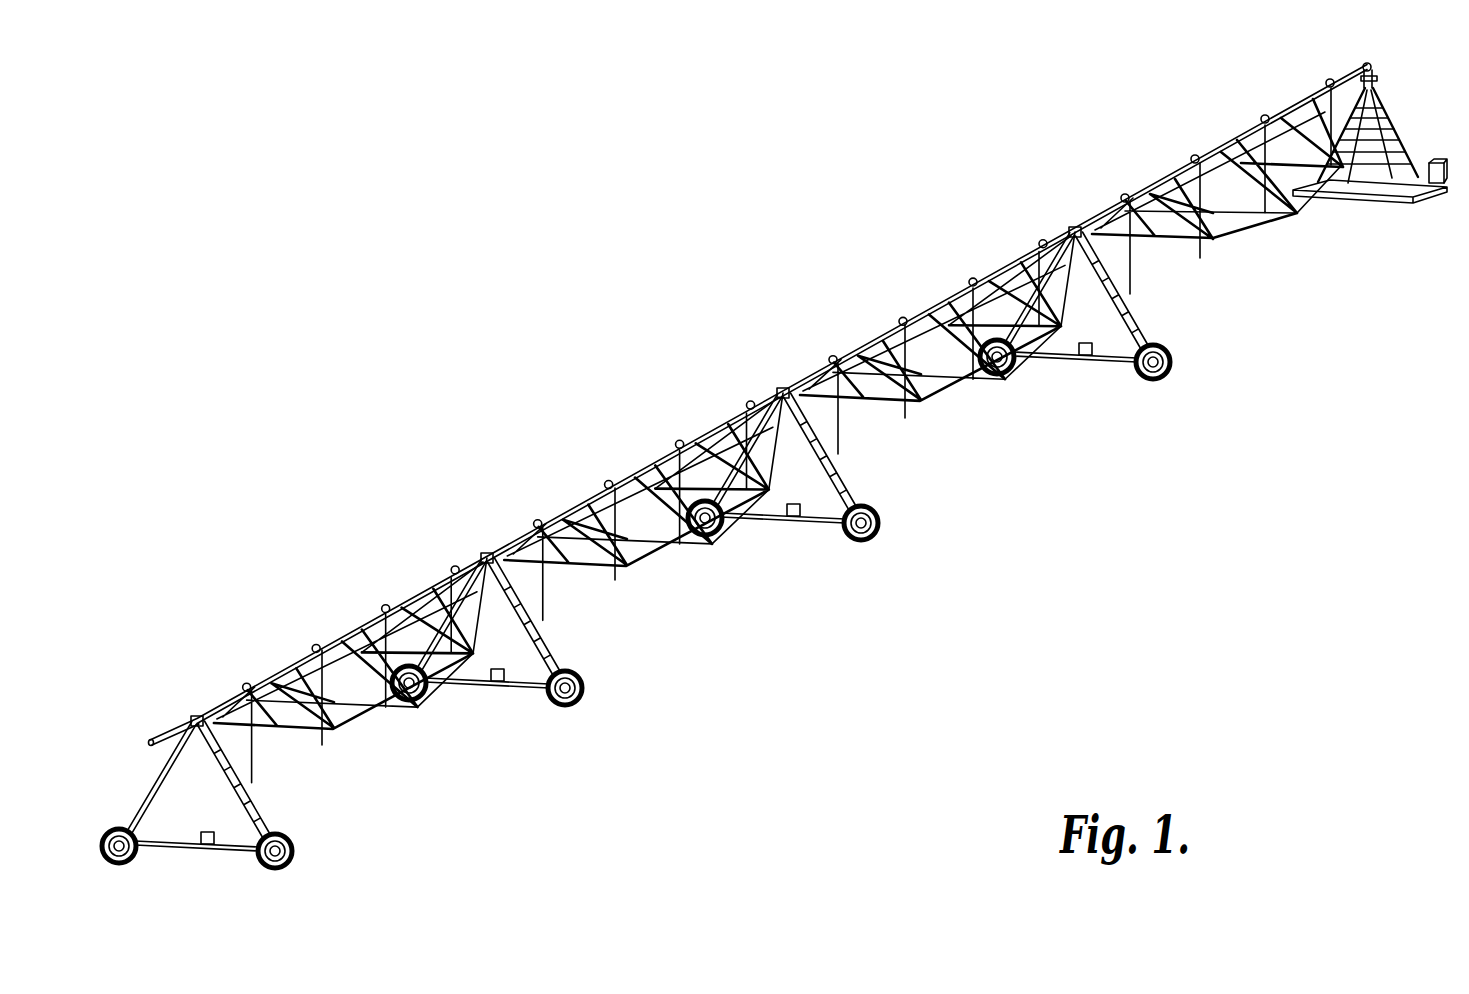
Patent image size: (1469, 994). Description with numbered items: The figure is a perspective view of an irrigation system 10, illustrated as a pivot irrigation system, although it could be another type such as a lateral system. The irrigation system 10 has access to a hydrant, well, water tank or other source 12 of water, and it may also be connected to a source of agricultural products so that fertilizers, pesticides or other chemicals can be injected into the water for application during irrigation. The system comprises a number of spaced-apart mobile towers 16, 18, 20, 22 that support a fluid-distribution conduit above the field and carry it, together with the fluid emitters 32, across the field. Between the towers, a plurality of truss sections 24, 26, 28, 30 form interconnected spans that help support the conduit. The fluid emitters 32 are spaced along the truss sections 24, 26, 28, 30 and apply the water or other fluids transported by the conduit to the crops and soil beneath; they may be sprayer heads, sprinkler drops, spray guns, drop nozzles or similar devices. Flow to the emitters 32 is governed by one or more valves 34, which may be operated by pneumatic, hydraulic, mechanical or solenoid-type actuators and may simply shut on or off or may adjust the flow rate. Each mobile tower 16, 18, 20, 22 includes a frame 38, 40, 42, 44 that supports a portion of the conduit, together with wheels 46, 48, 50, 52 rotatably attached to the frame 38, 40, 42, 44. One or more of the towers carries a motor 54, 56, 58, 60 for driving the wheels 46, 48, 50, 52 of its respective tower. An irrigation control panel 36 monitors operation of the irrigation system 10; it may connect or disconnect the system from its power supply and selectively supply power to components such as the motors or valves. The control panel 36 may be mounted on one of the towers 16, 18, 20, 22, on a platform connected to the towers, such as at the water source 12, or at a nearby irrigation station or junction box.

The irrigation system 10 is at (605, 258).
The source of water 12 is at (1370, 137).
The mobile tower 16 is at (227, 762).
The mobile tower 18 is at (538, 594).
The mobile tower 20 is at (825, 422).
The mobile tower 22 is at (1114, 259).
The truss section 24 is at (430, 725).
The truss section 26 is at (728, 565).
The truss section 28 is at (1020, 394).
The truss section 30 is at (1305, 222).
The fluid emitters 32 is at (322, 745).
The valve 34 is at (1365, 68).
The irrigation control panel 36 is at (1441, 184).
The frame 38 is at (255, 800).
The frame 40 is at (555, 640).
The frame 42 is at (845, 470).
The frame 44 is at (1135, 305).
The wheels 46 is at (292, 852).
The wheels 48 is at (585, 690).
The wheels 50 is at (880, 525).
The wheels 52 is at (1165, 372).
The motor 54 is at (205, 848).
The motor 56 is at (500, 680).
The motor 58 is at (790, 520).
The motor 60 is at (1083, 358).